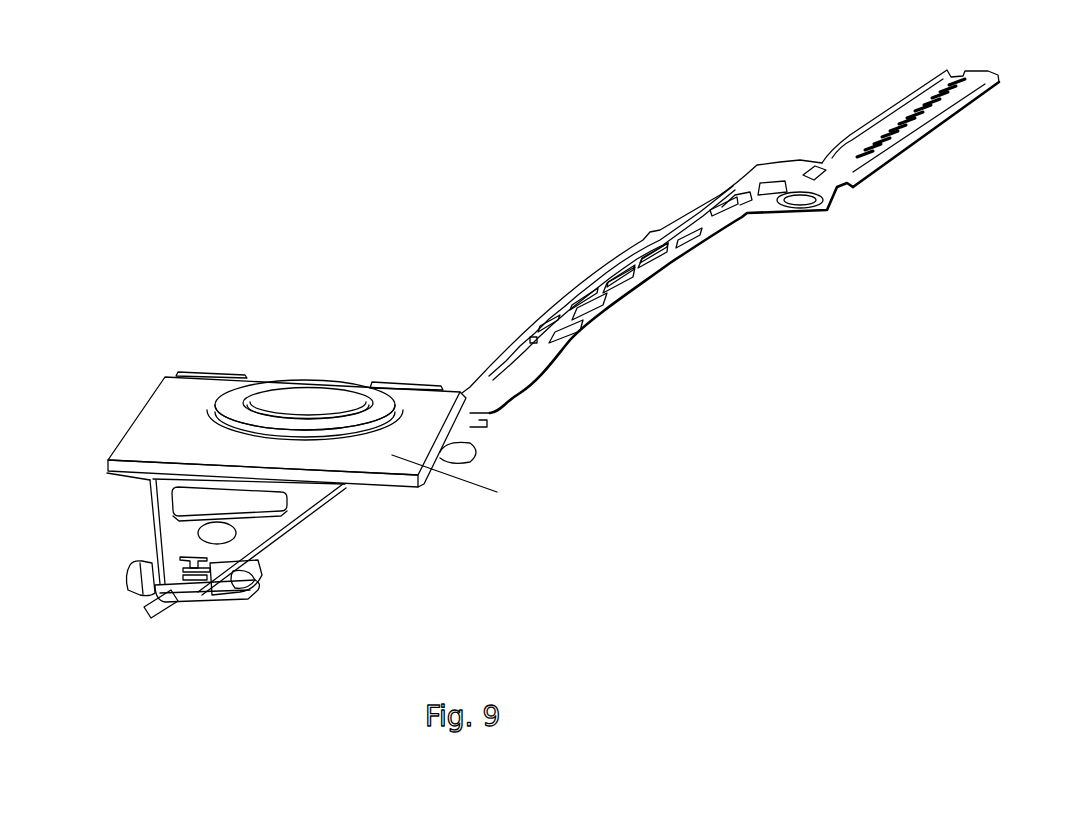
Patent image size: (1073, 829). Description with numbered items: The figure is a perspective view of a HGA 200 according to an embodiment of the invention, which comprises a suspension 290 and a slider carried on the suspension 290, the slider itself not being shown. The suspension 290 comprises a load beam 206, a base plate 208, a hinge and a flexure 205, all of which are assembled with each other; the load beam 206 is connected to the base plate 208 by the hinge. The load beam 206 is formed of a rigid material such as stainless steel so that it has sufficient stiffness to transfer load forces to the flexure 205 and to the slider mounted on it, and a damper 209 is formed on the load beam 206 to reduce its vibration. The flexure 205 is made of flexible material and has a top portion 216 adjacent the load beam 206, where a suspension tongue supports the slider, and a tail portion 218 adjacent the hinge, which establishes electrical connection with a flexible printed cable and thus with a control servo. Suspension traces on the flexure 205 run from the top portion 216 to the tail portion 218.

The HGA 200 is at (168, 261).
The flexure 205 is at (493, 422).
The base plate 208 is at (329, 438).
The suspension 290 is at (405, 497).
The damper 209 is at (278, 497).
The load beam 206 is at (257, 528).
The top portion 216 is at (262, 598).
The tail portion 218 is at (968, 118).